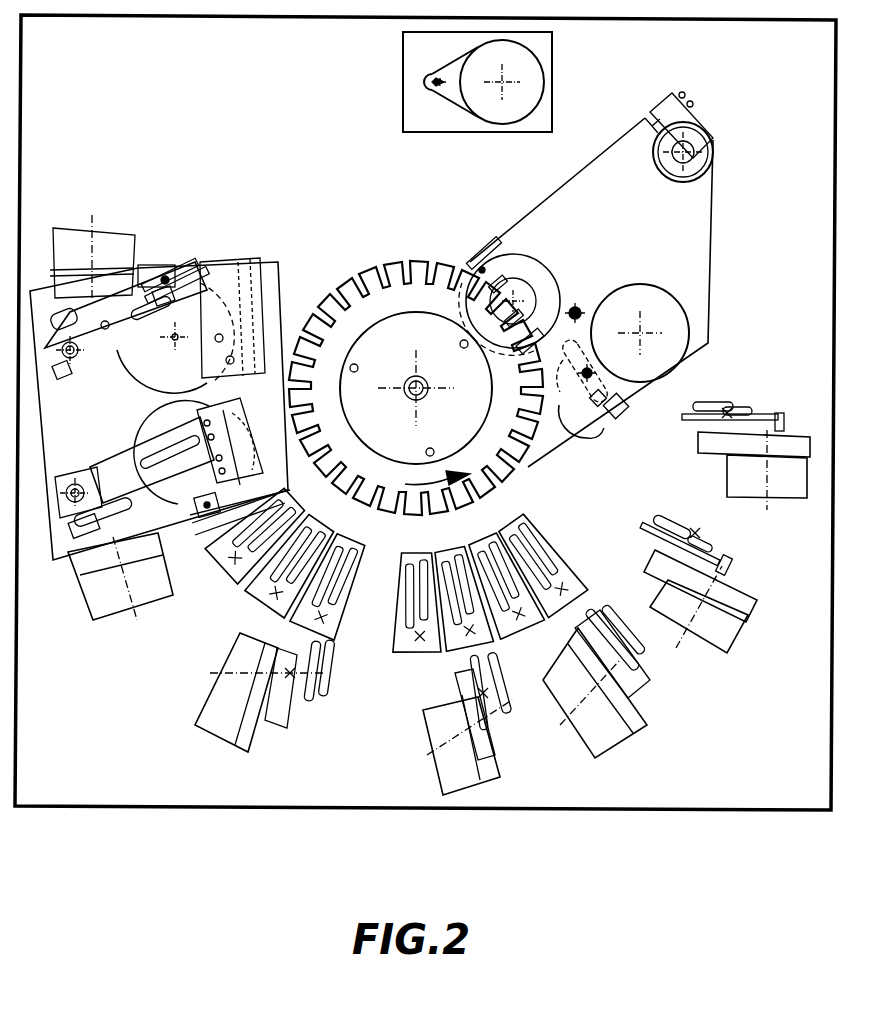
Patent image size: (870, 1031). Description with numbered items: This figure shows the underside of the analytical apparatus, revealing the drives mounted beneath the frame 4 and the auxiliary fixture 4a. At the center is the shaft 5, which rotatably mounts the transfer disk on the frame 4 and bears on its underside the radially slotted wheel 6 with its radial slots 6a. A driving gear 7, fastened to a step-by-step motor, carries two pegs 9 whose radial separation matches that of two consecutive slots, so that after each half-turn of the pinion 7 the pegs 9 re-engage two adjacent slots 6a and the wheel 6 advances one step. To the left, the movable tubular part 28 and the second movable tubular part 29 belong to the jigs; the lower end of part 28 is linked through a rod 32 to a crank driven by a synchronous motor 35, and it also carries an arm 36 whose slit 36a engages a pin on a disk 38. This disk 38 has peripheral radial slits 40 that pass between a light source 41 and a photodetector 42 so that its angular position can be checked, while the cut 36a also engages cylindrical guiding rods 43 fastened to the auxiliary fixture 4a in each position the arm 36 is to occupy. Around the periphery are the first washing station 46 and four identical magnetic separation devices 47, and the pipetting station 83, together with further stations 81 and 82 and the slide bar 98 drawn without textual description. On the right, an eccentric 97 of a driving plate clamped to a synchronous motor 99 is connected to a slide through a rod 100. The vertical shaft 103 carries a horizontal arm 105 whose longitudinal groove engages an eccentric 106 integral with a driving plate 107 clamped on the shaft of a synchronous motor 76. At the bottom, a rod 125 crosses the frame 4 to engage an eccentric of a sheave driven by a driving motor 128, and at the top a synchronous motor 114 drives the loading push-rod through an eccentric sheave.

The synchronous motor 114 is at (540, 80).
The synchronous motor 35 is at (112, 244).
The slit 36a is at (147, 280).
The light source 41 is at (148, 290).
The photodetector 42 is at (150, 290).
The cylindrical guiding rods 43 is at (212, 282).
The radial slots 6a is at (360, 275).
The radially slotted wheel 6 is at (418, 295).
The driving gear 7 is at (530, 292).
The pegs 9 is at (525, 299).
The vertical shaft 103 is at (582, 314).
The synchronous motor 76 is at (668, 322).
The disk 38 is at (175, 338).
The movable tubular part 28 is at (74, 364).
The arm 36 is at (108, 352).
The peripheral radial slits 40 is at (158, 390).
The shaft 5 is at (428, 392).
The eccentric 97 is at (738, 402).
The rod 100 is at (768, 408).
The slide bar 98 is at (776, 416).
The movable tubular part 29 is at (68, 482).
The driving plate 107 is at (594, 425).
The horizontal arm 105 is at (600, 432).
The eccentric 106 is at (597, 440).
The synchronous motor 99 is at (752, 484).
The pipetting station 83 is at (751, 442).
The rod 32 is at (70, 552).
The auxiliary fixture 4a is at (235, 541).
The transfer station 82 is at (760, 622).
The magnetic separation devices 47 is at (200, 620).
The driving motor 128 is at (440, 742).
The rod 125 is at (508, 690).
The transfer station 81 is at (652, 730).
The first washing station 46 is at (248, 778).
The frame 4 is at (612, 790).